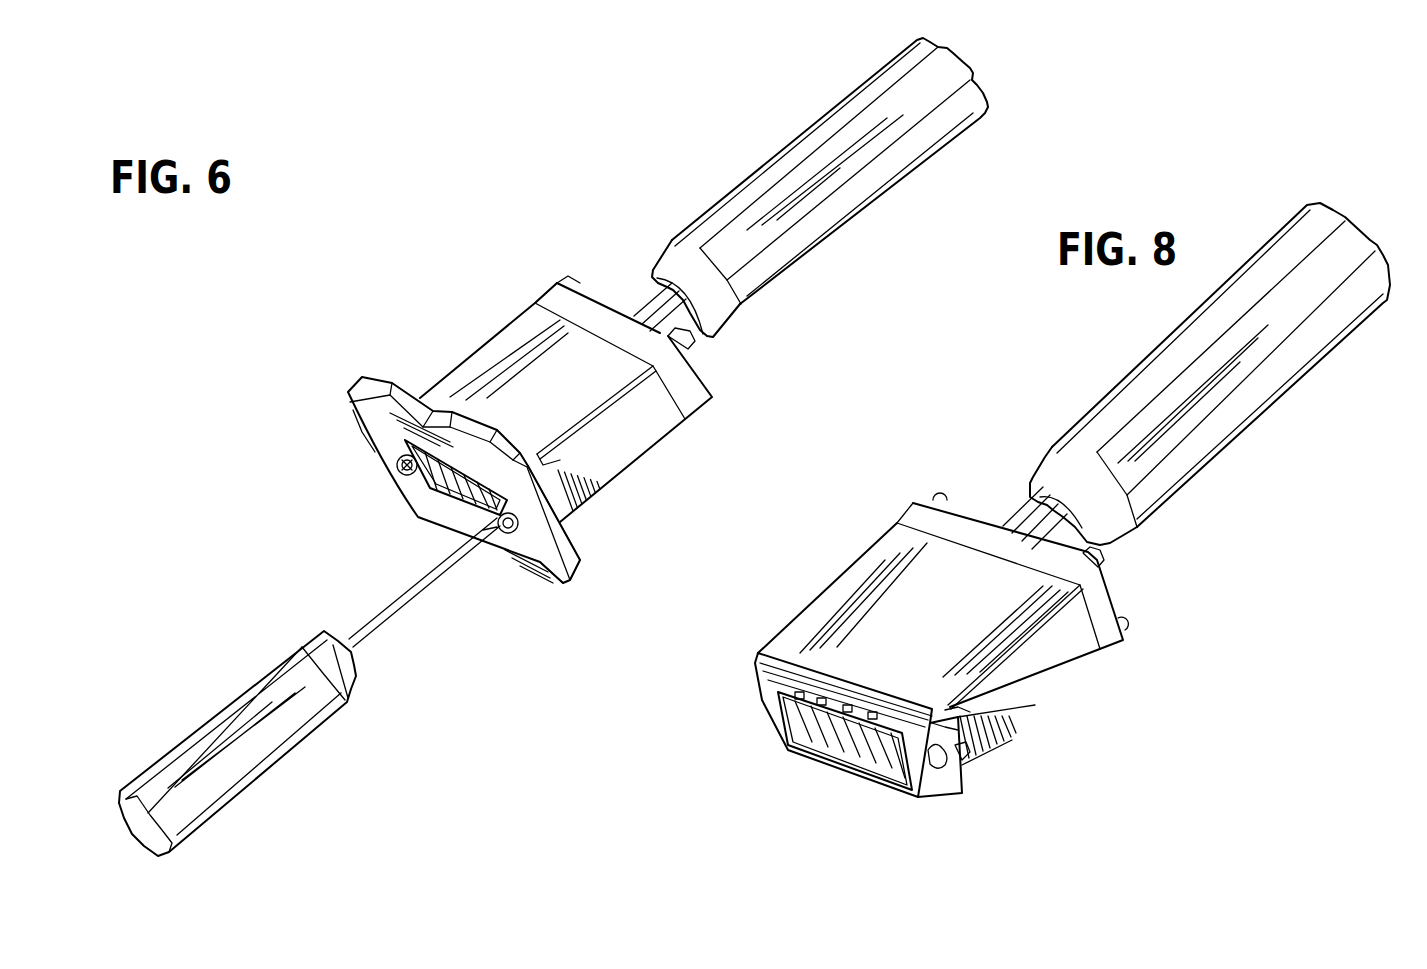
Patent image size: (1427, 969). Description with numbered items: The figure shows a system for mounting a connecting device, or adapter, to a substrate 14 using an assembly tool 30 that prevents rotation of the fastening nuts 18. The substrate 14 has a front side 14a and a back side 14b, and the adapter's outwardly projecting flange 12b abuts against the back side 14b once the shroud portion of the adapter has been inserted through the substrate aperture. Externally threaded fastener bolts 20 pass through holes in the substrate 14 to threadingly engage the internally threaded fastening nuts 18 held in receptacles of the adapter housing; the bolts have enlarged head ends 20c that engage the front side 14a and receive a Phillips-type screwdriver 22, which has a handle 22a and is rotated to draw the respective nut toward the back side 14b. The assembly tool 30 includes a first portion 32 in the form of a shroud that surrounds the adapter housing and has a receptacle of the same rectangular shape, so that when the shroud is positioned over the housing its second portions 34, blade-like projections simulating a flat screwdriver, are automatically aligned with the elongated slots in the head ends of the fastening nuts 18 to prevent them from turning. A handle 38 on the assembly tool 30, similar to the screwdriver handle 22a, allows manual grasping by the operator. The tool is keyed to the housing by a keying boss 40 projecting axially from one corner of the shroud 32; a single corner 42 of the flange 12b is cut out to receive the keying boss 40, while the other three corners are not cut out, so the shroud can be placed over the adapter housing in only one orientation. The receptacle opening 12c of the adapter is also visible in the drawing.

In FIG. 8, the flange 12b is at (937, 787).
In FIG. 6, the plug receptacle opening 12c is at (417, 523).
In FIG. 8, the plug receptacle opening 12c is at (800, 763).
In FIG. 6, the substrate 14 is at (358, 388).
In FIG. 6, the front side 14a is at (362, 410).
In FIG. 6, the back side 14b is at (582, 548).
In FIG. 8, the fastening nut 18 is at (973, 773).
In FIG. 6, the fastener bolt 20 is at (553, 583).
In FIG. 6, the head end 20c is at (398, 485).
In FIG. 6, the screwdriver 22 is at (343, 626).
In FIG. 6, the handle 22a is at (180, 770).
In FIG. 6, the assembly tool 30 is at (604, 283).
In FIG. 8, the assembly tool 30 is at (992, 494).
In FIG. 6, the first portion 32 is at (600, 385).
In FIG. 8, the first portion 32 is at (840, 595).
In FIG. 8, the second portion 34 is at (957, 740).
In FIG. 6, the handle 38 is at (825, 185).
In FIG. 8, the handle 38 is at (1240, 377).
In FIG. 8, the keying boss 40 is at (970, 710).
In FIG. 8, the corner 42 is at (890, 787).